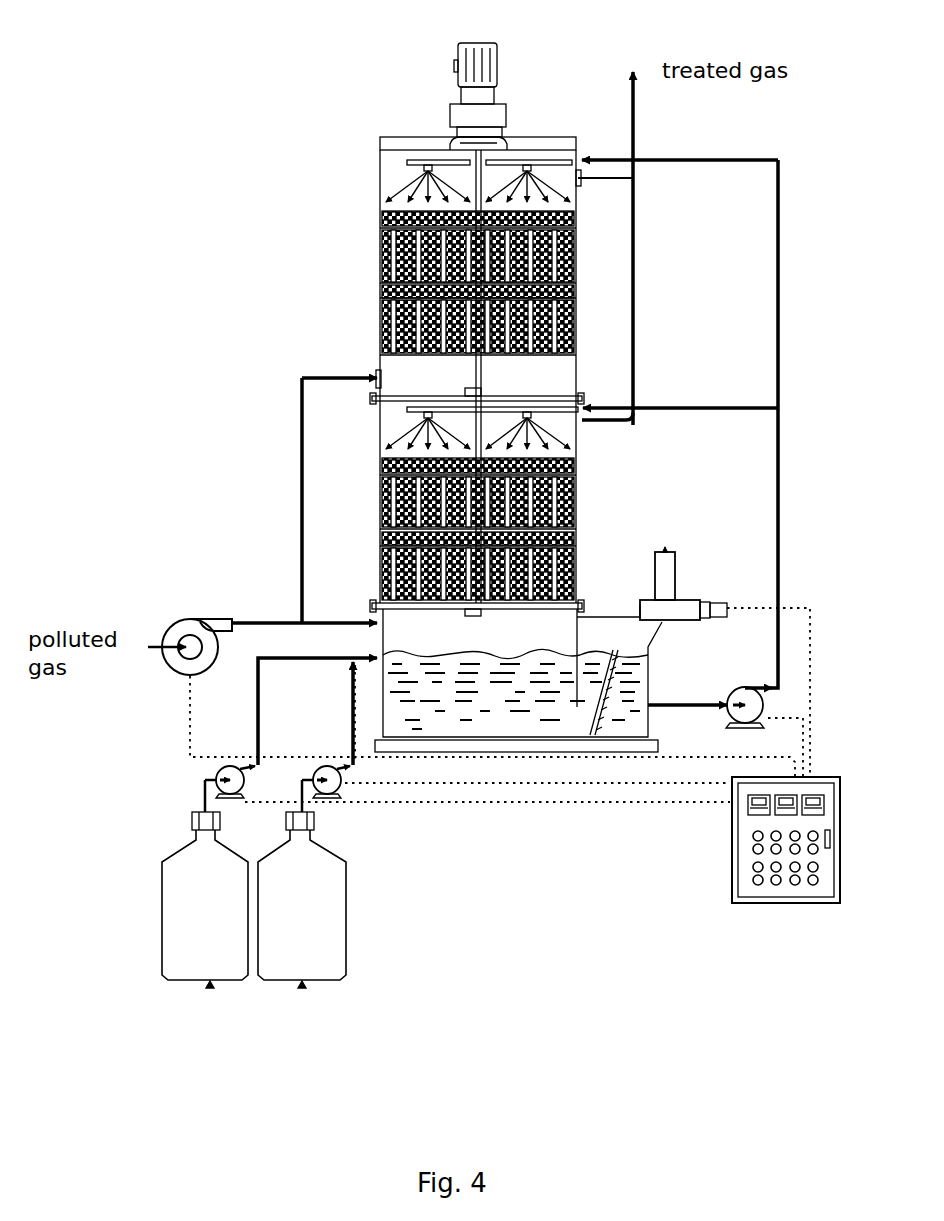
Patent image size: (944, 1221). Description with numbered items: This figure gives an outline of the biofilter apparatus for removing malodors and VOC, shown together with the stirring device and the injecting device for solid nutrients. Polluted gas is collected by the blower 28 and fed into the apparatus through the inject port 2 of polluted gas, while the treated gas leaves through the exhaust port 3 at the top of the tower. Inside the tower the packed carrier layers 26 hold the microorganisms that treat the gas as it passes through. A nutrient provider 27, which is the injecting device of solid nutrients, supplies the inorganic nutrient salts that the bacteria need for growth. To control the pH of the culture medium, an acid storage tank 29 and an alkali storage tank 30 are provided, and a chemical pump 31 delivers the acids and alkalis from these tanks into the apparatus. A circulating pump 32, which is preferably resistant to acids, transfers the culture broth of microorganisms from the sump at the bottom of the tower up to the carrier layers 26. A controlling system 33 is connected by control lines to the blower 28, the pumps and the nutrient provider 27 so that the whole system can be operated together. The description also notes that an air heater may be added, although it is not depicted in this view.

The inject port 2 is at (372, 366).
The exhaust port 3 is at (583, 420).
The packing layer 26 is at (378, 237).
The nutrient provider 27 is at (676, 579).
The blower 28 is at (190, 614).
The acid storage tank 29 is at (205, 929).
The alkali storage tank 30 is at (302, 929).
The chemical pump 31 is at (344, 790).
The circulating pump 32 is at (766, 705).
The controlling system 33 is at (730, 837).